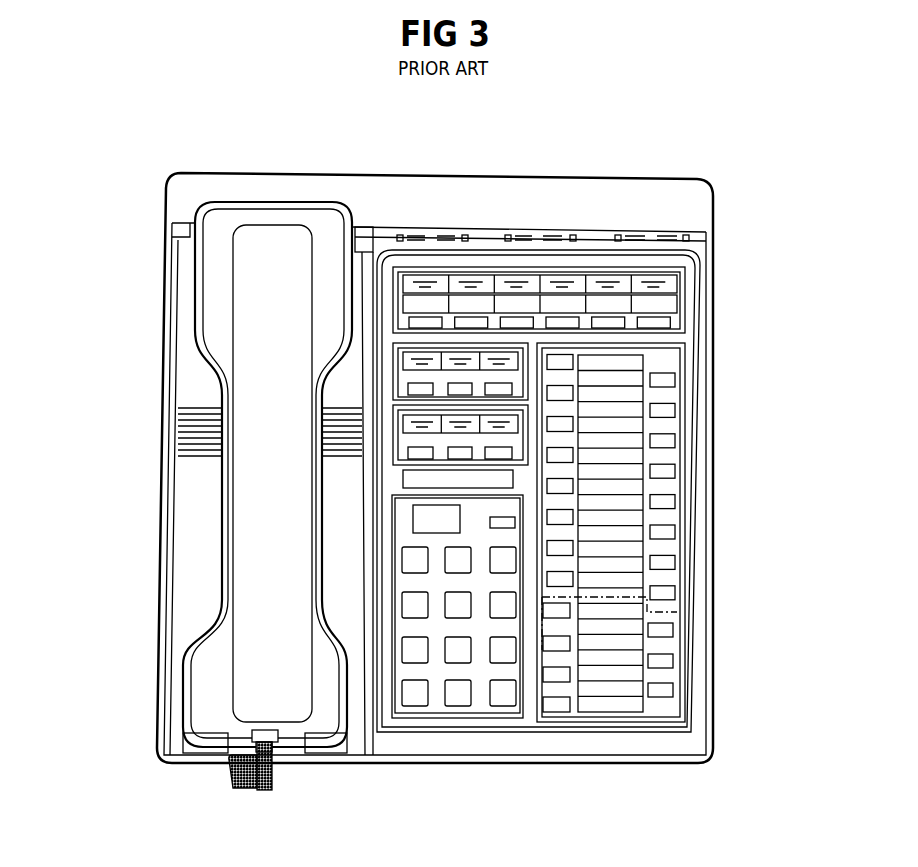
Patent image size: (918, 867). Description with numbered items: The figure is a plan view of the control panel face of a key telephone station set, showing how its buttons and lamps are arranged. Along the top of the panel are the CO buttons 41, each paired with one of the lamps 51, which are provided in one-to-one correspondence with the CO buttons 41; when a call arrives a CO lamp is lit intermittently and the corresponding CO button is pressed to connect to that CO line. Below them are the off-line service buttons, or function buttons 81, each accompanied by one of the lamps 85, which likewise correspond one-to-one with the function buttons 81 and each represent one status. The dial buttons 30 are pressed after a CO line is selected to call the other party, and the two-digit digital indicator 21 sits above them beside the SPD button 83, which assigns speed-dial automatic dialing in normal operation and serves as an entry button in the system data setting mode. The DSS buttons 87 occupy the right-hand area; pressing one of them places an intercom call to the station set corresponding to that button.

The lamps 51 is at (675, 287).
The CO buttons 41 is at (672, 323).
The lamps 85 is at (403, 358).
The function buttons 81 is at (727, 778).
The digital indicator 21 is at (430, 537).
The SPD button 83 is at (470, 517).
The DSS buttons 87 is at (678, 503).
The dial buttons 30 is at (492, 708).